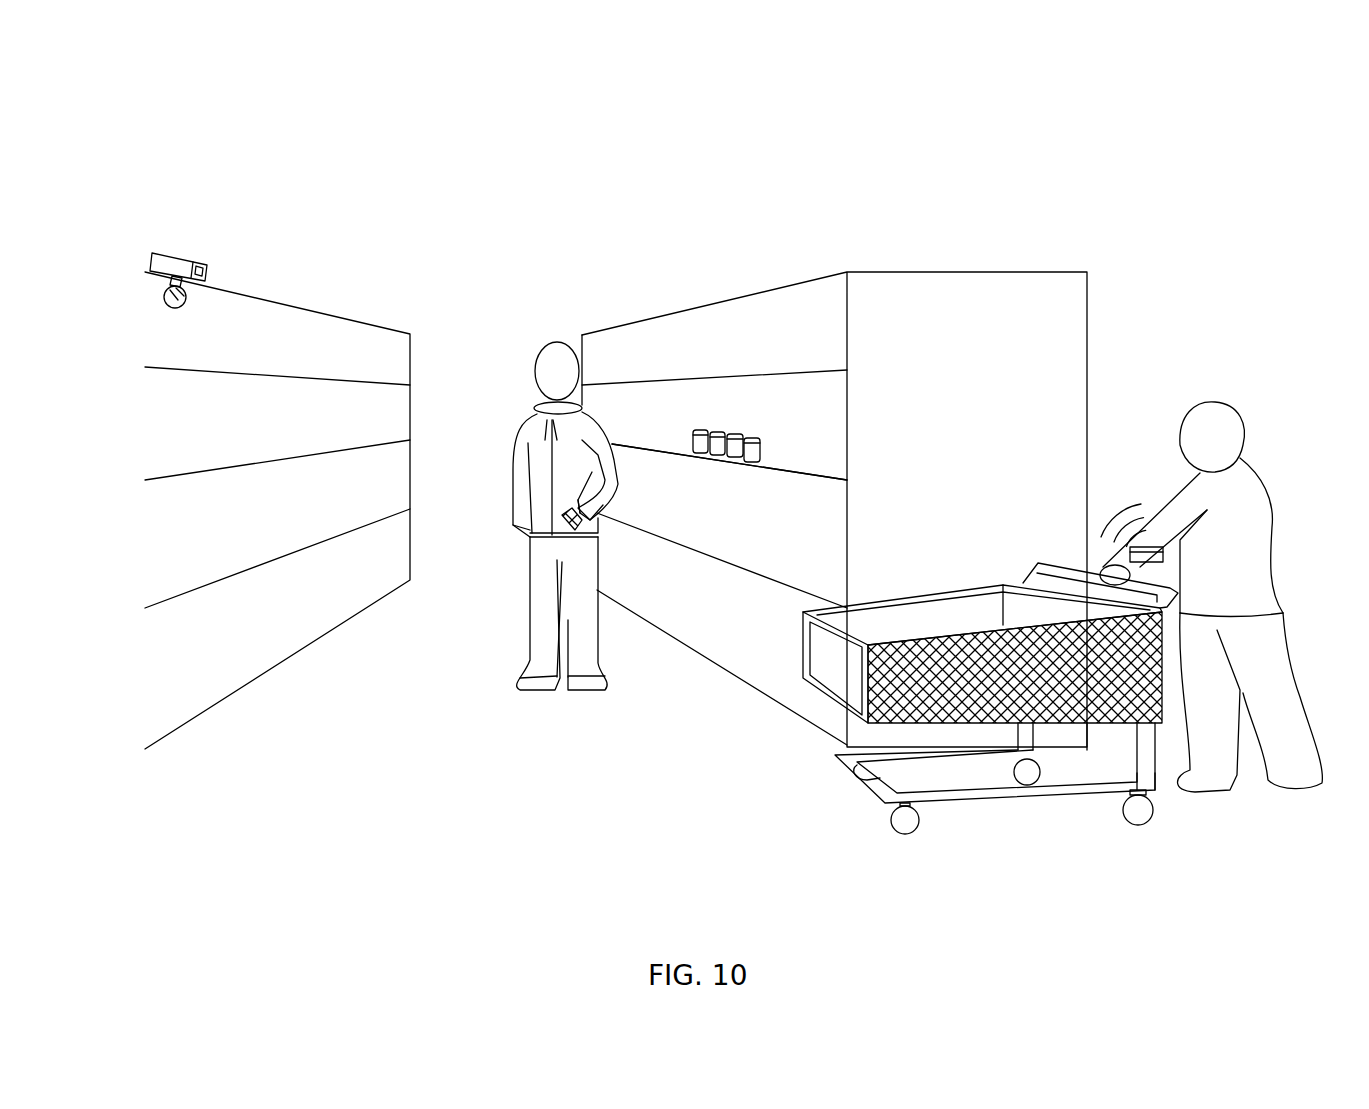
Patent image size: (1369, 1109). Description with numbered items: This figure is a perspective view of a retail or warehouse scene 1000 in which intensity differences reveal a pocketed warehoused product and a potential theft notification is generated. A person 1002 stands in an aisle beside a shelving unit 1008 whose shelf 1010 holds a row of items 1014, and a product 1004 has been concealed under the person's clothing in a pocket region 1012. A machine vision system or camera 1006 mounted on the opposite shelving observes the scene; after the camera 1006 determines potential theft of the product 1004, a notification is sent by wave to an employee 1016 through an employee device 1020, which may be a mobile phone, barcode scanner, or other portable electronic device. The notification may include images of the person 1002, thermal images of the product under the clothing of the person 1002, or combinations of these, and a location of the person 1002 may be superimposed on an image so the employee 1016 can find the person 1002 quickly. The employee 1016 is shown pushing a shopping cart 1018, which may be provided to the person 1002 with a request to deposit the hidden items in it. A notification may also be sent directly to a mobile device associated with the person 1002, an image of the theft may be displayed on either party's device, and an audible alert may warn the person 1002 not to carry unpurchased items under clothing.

The materials handling facility environment 1000 is at (213, 120).
The person 1002 is at (524, 437).
The product 1004 is at (600, 512).
The machine vision system/camera 1006 is at (213, 267).
The inventory location shelving unit 1008 is at (633, 330).
The shelf 1010 is at (760, 440).
The item in pocket 1012 is at (572, 527).
The items 1014 is at (752, 456).
The employee 1016 is at (1253, 488).
The cart 1018 is at (980, 612).
The employee device 1020 is at (1155, 545).